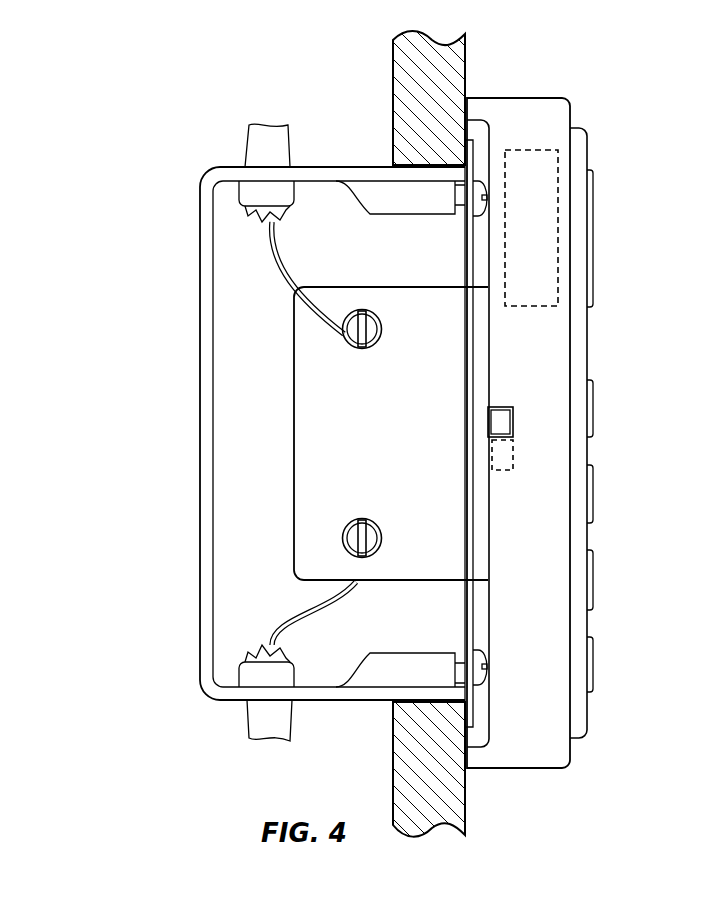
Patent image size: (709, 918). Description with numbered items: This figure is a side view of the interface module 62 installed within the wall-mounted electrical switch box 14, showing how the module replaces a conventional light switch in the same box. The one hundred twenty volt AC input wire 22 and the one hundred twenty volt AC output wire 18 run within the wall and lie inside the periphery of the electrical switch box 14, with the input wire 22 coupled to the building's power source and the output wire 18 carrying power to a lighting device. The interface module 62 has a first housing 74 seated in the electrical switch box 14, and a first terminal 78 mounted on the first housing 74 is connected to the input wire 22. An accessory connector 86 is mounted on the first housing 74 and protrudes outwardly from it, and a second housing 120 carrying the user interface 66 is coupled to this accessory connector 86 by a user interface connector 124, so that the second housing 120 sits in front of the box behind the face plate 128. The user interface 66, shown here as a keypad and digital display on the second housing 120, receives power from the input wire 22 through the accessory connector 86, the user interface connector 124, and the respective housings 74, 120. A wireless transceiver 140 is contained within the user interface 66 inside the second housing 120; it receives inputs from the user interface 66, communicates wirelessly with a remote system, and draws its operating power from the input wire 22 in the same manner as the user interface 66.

The electrical switch box 14 is at (378, 166).
The 120 V AC output wire 18 is at (243, 150).
The 120 V AC input wire 22 is at (246, 716).
The interface module 62 is at (563, 383).
The user interface 66 is at (601, 217).
The first housing 74 is at (294, 470).
The first terminal 78 is at (354, 347).
The accessory connector 86 is at (484, 421).
The second housing 120 is at (518, 98).
The user interface connector 124 is at (516, 458).
The face plate 128 is at (587, 333).
The wireless transceiver 140 is at (559, 160).